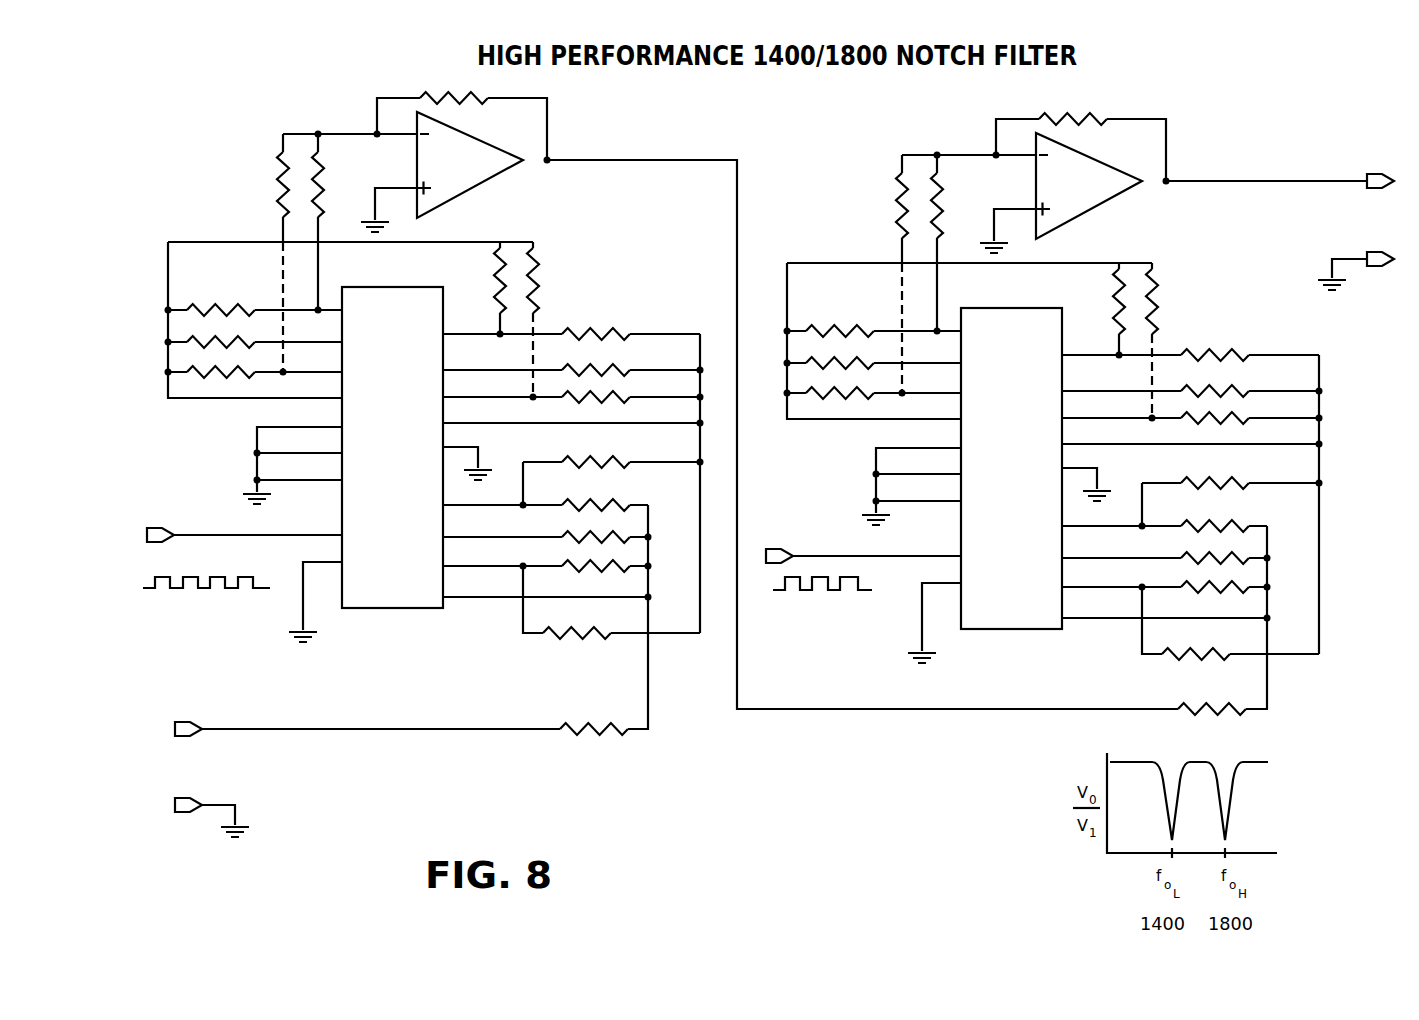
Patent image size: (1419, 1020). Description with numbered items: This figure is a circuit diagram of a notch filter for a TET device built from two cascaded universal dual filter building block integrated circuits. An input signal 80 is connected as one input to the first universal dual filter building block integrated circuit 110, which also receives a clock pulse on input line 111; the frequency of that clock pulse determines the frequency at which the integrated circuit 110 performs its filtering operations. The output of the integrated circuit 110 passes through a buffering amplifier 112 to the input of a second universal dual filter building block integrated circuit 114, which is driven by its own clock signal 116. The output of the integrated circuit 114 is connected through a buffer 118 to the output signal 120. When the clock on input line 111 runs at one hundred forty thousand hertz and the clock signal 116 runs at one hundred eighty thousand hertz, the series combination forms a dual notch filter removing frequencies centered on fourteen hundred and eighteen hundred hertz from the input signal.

The input signal 80 is at (270, 727).
The universal dual filter building block integrated circuit 110 is at (411, 432).
The input line 111 is at (212, 533).
The buffering amplifier 112 is at (457, 143).
The second universal dual filter building block integrated circuit 114 is at (1015, 468).
The clock signal 116 is at (819, 568).
The buffer 118 is at (1075, 183).
The output signal 120 is at (1280, 171).